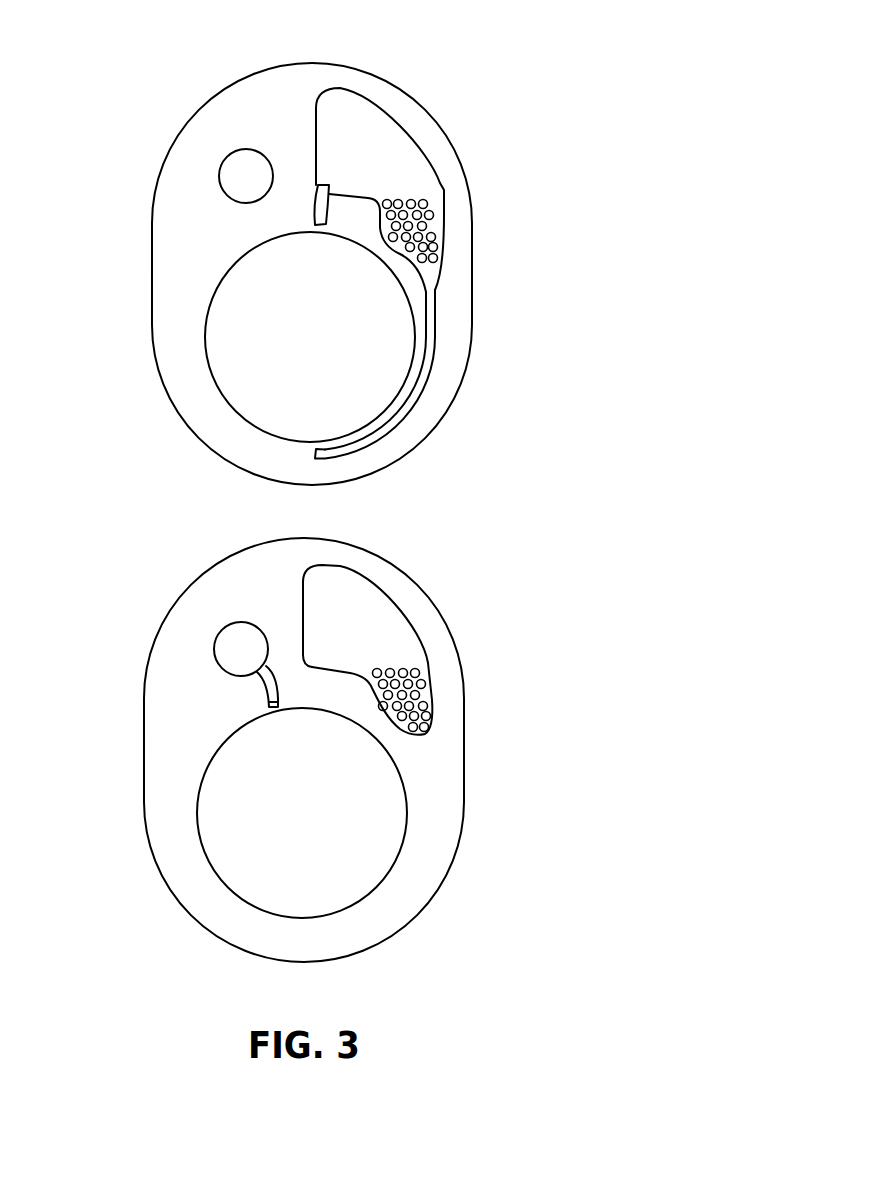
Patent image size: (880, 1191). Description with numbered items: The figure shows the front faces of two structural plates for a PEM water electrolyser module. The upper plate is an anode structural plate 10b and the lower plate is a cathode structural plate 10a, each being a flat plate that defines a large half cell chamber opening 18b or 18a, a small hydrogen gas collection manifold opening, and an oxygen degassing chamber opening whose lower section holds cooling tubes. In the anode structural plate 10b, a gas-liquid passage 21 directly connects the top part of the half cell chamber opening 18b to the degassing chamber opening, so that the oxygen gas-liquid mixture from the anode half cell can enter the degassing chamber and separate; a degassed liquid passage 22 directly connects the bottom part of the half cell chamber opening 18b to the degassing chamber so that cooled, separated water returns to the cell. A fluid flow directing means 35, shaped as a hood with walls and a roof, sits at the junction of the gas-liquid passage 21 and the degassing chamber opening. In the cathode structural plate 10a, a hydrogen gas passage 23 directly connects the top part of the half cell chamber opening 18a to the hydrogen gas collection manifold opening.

The cathode structural plate 10a is at (420, 602).
The anode structural plate 10b is at (436, 123).
The half cell chamber opening 18a is at (330, 810).
The half cell chamber opening 18b is at (315, 346).
The gas-liquid passage 21 is at (330, 202).
The degassed liquid passage 22 is at (436, 348).
The hydrogen gas passage 23 is at (267, 694).
The fluid flow directing means 35 is at (316, 184).